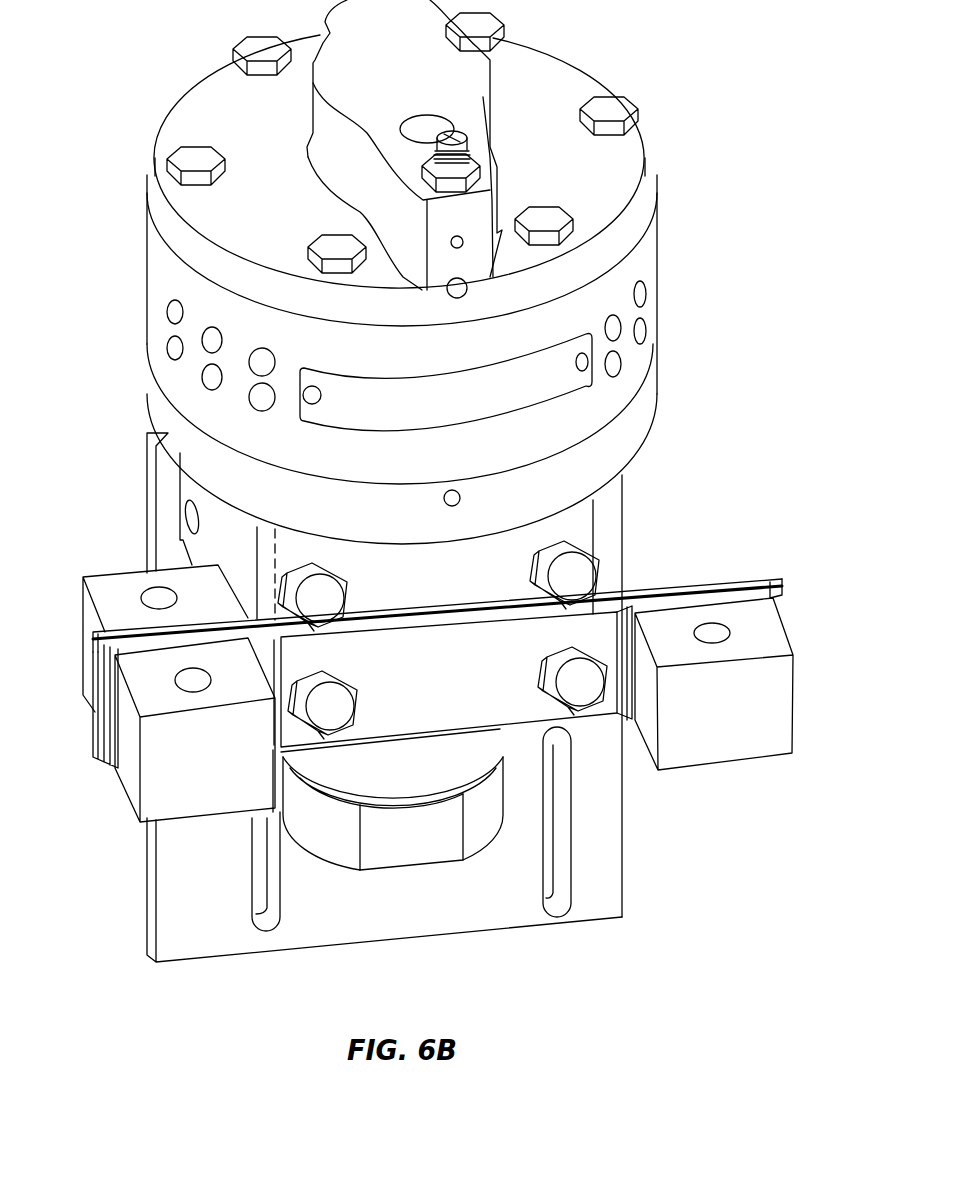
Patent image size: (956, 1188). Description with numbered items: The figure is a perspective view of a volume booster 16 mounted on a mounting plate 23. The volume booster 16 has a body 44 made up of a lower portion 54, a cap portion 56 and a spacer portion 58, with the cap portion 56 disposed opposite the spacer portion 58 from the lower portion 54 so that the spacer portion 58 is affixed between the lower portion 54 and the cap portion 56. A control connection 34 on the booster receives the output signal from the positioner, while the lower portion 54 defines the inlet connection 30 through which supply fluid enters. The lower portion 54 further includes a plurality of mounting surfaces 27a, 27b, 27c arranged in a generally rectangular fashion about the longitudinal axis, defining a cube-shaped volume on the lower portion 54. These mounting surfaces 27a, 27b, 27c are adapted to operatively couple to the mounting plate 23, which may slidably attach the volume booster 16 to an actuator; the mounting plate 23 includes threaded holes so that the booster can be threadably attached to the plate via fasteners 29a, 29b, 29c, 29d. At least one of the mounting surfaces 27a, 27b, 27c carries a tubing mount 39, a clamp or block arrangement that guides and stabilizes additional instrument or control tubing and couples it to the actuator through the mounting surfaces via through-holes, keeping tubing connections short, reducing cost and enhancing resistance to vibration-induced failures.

The volume booster 16 is at (150, 74).
The control connection 34 is at (433, 128).
The cap portion 56 is at (585, 80).
The body 44 is at (147, 270).
The spacer portion 58 is at (630, 378).
The lower portion 54 is at (608, 453).
The mounting surface 27a is at (187, 541).
The mounting surface 27b is at (583, 520).
The mounting surface 27c is at (613, 490).
The fastener 29a is at (543, 683).
The fastener 29b is at (532, 562).
The fastener 29c is at (347, 590).
The fastener 29d is at (357, 703).
The tubing mount 39 is at (738, 772).
The inlet connection 30 is at (345, 855).
The mounting plate 23 is at (170, 953).